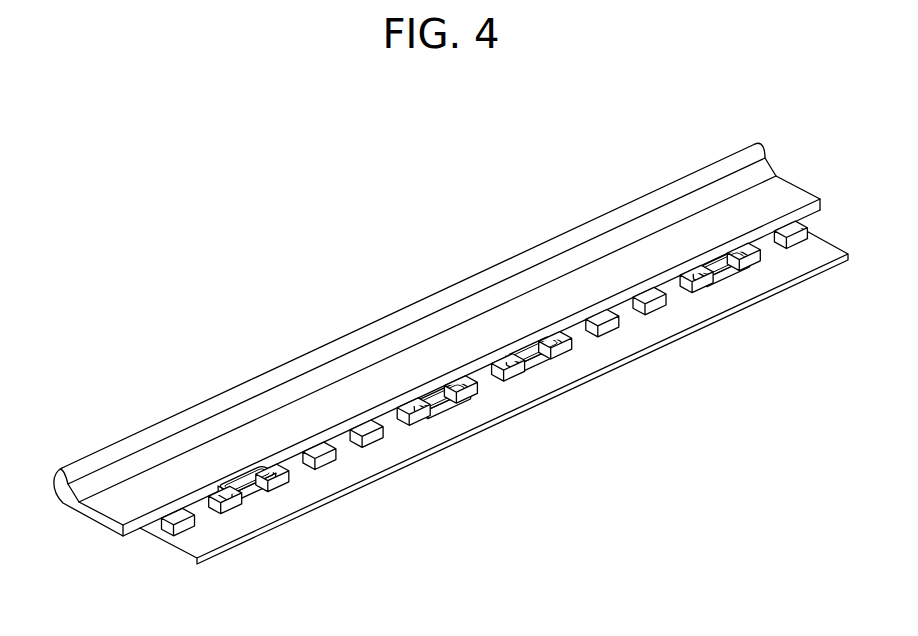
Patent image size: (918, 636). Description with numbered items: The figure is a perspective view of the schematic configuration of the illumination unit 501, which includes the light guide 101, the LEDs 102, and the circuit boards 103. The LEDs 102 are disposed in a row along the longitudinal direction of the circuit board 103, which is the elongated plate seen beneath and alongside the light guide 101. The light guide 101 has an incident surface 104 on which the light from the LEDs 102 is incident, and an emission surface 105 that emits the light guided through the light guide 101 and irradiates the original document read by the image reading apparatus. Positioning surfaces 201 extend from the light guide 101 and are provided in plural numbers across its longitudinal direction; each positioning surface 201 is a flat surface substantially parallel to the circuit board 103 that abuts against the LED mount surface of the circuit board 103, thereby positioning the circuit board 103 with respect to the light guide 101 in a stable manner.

The illumination unit 501 is at (507, 170).
The positioning surface 201 is at (718, 256).
The emission surface 105 is at (185, 412).
The circuit board 103 is at (403, 439).
The incident surface 104 is at (138, 532).
The light guide 101 is at (72, 497).
The LED 102 is at (187, 527).